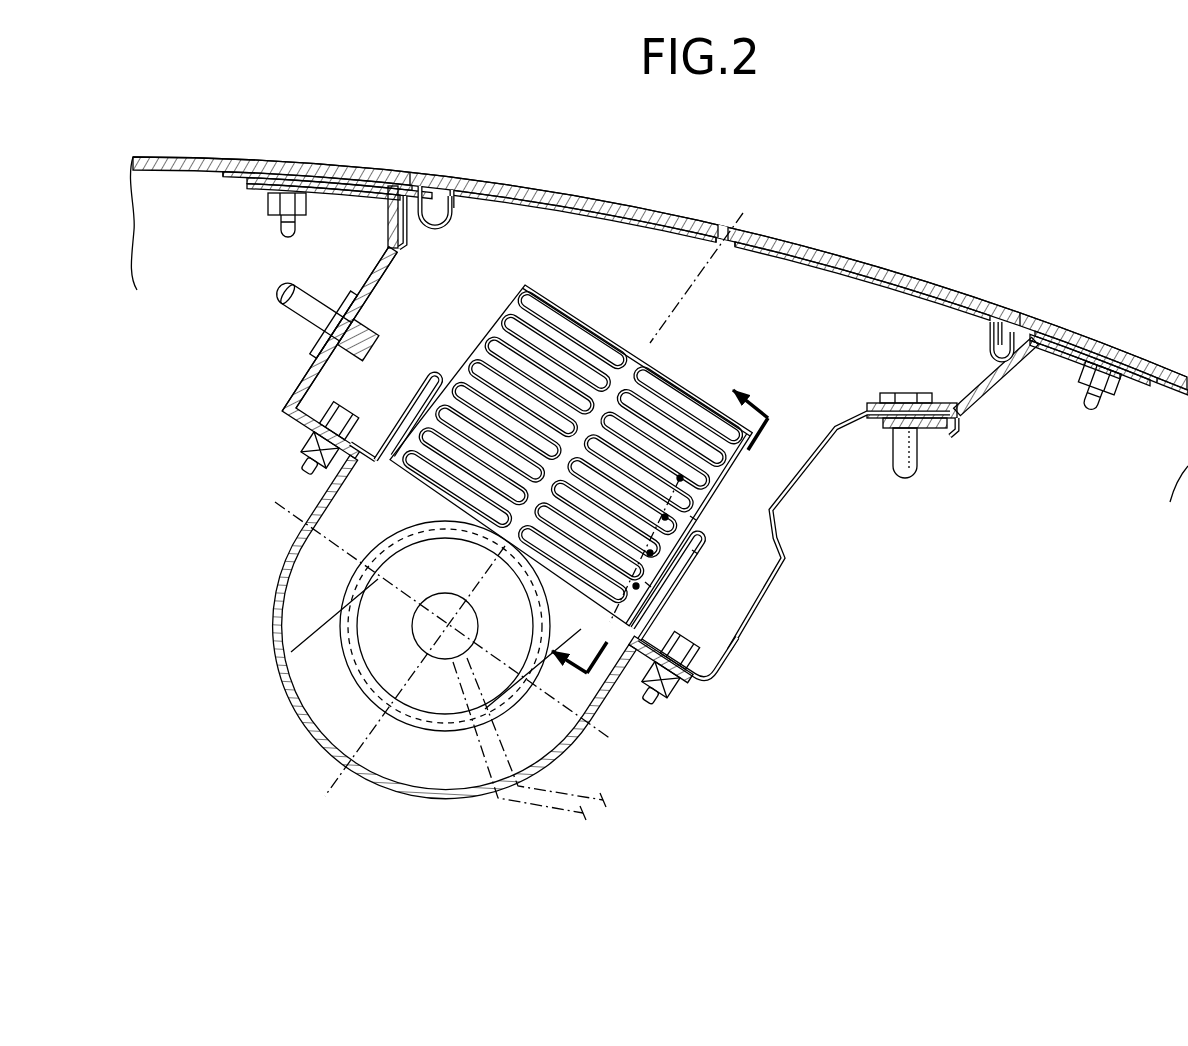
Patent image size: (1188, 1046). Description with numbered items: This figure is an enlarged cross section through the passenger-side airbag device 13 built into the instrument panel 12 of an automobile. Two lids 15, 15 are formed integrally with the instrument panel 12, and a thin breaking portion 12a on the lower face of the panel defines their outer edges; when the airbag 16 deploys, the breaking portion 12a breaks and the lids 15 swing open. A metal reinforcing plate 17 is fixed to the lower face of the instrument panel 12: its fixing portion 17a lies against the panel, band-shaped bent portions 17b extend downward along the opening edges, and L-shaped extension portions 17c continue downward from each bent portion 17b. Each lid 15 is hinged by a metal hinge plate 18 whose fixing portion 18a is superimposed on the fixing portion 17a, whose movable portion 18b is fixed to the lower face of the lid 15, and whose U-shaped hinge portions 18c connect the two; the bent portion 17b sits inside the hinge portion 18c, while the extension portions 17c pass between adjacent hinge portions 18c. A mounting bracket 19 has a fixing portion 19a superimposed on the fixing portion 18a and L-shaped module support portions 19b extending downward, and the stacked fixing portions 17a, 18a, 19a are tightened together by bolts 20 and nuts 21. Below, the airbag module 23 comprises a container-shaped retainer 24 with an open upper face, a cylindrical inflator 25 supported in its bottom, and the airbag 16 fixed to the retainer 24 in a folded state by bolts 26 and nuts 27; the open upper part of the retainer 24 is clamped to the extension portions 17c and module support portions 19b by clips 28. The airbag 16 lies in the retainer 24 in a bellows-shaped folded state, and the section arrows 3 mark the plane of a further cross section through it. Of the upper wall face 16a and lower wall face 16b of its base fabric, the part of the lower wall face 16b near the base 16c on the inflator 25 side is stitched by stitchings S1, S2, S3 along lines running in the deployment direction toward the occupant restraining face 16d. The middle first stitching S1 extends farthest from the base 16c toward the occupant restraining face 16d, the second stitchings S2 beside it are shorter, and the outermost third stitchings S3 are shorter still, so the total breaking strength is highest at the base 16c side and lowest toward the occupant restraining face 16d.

The instrument panel 12 is at (806, 238).
The breaking portion 12a is at (408, 176).
The airbag device 13 is at (893, 650).
The lid 15 is at (584, 198).
The airbag 16 is at (790, 570).
The upper wall face 16a is at (468, 360).
The lower wall face 16b is at (709, 495).
The base 16c is at (478, 500).
The occupant restraining face 16d is at (658, 368).
The reinforcing plate 17 is at (393, 264).
The fixing portion 17a is at (317, 172).
The bent portion 17b is at (436, 195).
The extension portion 17c is at (388, 278).
The hinge plate 18 is at (584, 227).
The fixing portion 18a is at (240, 178).
The movable portion 18b is at (760, 262).
The hinge portion 18c is at (453, 210).
The mounting bracket 19 is at (683, 342).
The fixing portion 19a is at (339, 198).
The module support portion 19b is at (392, 250).
The bolt 20 is at (286, 236).
The nut 21 is at (268, 210).
The airbag module 23 is at (634, 742).
The retainer 24 is at (278, 620).
The inflator 25 is at (380, 597).
The bolt 26 is at (348, 410).
The nut 27 is at (305, 444).
The clip 28 is at (292, 310).
The section line 3- 3 is at (676, 552).
The first stitching S1 is at (694, 518).
The second stitching S2 is at (696, 557).
The third stitching S3 is at (648, 585).